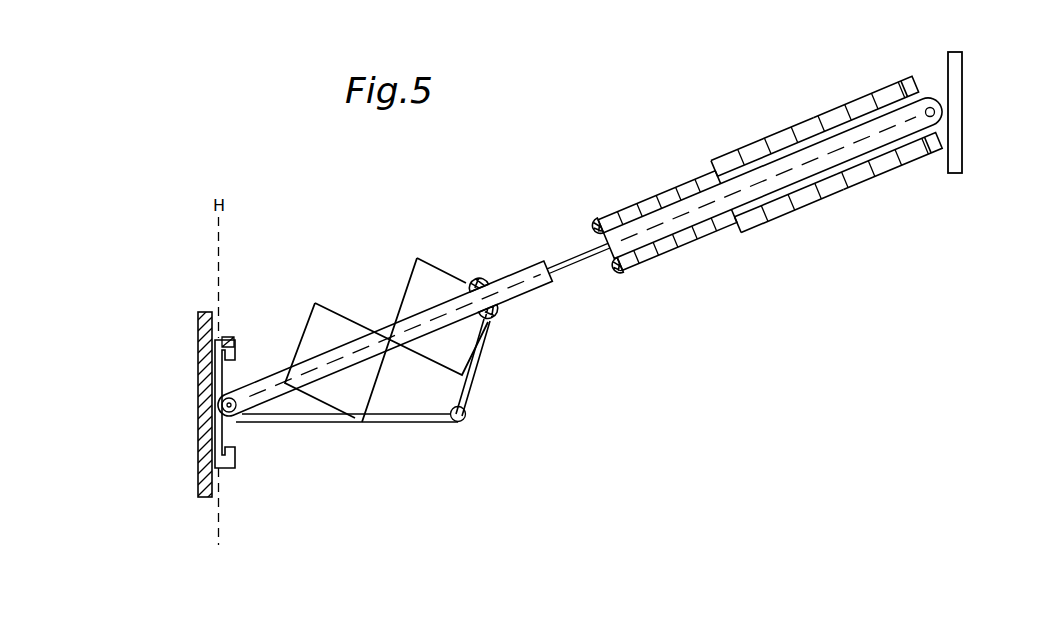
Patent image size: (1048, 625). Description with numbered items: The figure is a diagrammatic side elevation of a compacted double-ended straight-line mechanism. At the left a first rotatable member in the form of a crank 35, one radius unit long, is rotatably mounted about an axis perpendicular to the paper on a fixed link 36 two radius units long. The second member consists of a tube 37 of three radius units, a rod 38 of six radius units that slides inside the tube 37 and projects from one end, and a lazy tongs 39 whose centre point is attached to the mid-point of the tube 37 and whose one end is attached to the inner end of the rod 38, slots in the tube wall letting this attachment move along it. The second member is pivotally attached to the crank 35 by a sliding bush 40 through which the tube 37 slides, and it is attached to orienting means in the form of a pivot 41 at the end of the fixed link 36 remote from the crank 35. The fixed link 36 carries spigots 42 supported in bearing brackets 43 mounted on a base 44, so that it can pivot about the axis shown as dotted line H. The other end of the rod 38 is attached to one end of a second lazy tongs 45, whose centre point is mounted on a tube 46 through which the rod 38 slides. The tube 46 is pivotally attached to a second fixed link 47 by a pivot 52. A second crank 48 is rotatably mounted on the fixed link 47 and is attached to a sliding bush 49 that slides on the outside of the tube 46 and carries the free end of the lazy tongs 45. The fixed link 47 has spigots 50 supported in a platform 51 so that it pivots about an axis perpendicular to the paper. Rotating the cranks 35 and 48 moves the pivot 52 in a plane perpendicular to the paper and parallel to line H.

The crank 35 is at (478, 370).
The fixed link 36 is at (387, 419).
The tube 37 is at (521, 267).
The rod 38 is at (580, 247).
The lazy tongs 39 is at (470, 277).
The sliding bush 40 is at (492, 325).
The pivot 41 is at (235, 407).
The spigots 42 is at (220, 454).
The bearing brackets 43 is at (229, 338).
The base 44 is at (202, 370).
The lazy tongs 45 is at (866, 104).
The tube 46 is at (820, 152).
The fixed link 47 is at (752, 143).
The crank 48 is at (672, 187).
The sliding bush 49 is at (607, 213).
The spigots 50 is at (936, 111).
The platform 51 is at (957, 154).
The pivot 52 is at (921, 88).